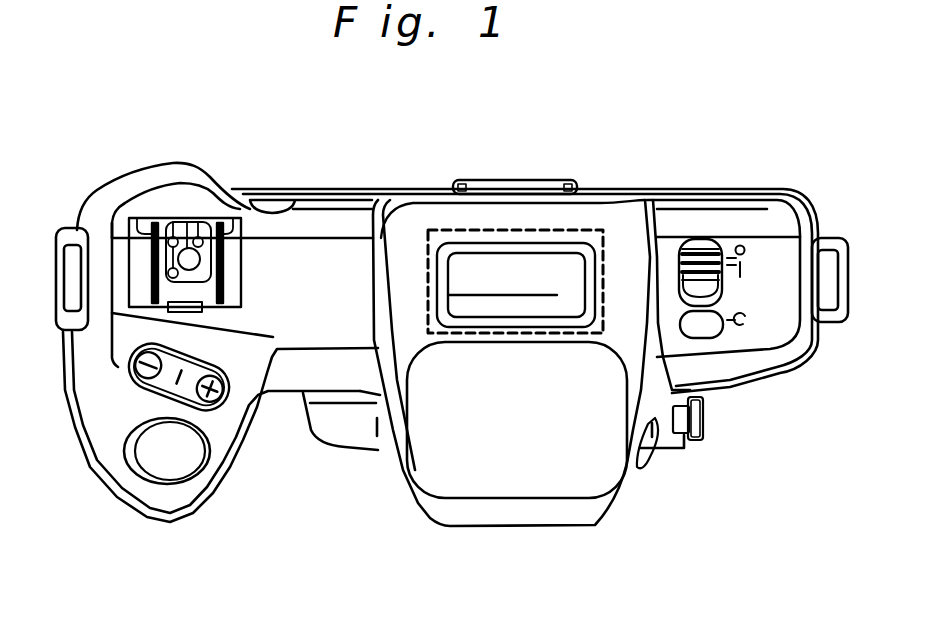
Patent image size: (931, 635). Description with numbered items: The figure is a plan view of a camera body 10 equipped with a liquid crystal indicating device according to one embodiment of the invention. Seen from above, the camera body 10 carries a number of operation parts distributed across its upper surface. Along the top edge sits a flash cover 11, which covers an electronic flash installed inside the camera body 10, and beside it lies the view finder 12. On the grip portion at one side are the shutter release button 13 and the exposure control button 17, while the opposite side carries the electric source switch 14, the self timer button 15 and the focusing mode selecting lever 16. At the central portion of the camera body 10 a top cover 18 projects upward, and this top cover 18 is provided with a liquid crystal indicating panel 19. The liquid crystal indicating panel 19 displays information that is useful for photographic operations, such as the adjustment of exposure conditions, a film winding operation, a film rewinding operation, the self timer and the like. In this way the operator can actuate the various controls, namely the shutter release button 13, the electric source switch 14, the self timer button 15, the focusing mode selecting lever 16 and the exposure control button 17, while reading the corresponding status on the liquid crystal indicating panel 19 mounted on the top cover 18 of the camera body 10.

The camera body 10 is at (321, 185).
The flash cover 11 is at (587, 453).
The view finder 12 is at (521, 180).
The shutter release button 13 is at (155, 454).
The electric source switch 14 is at (701, 258).
The self timer button 15 is at (706, 338).
The focusing mode selecting lever 16 is at (705, 420).
The exposure control button 17 is at (134, 369).
The top cover 18 is at (404, 224).
The liquid crystal indicating panel 19 is at (562, 270).